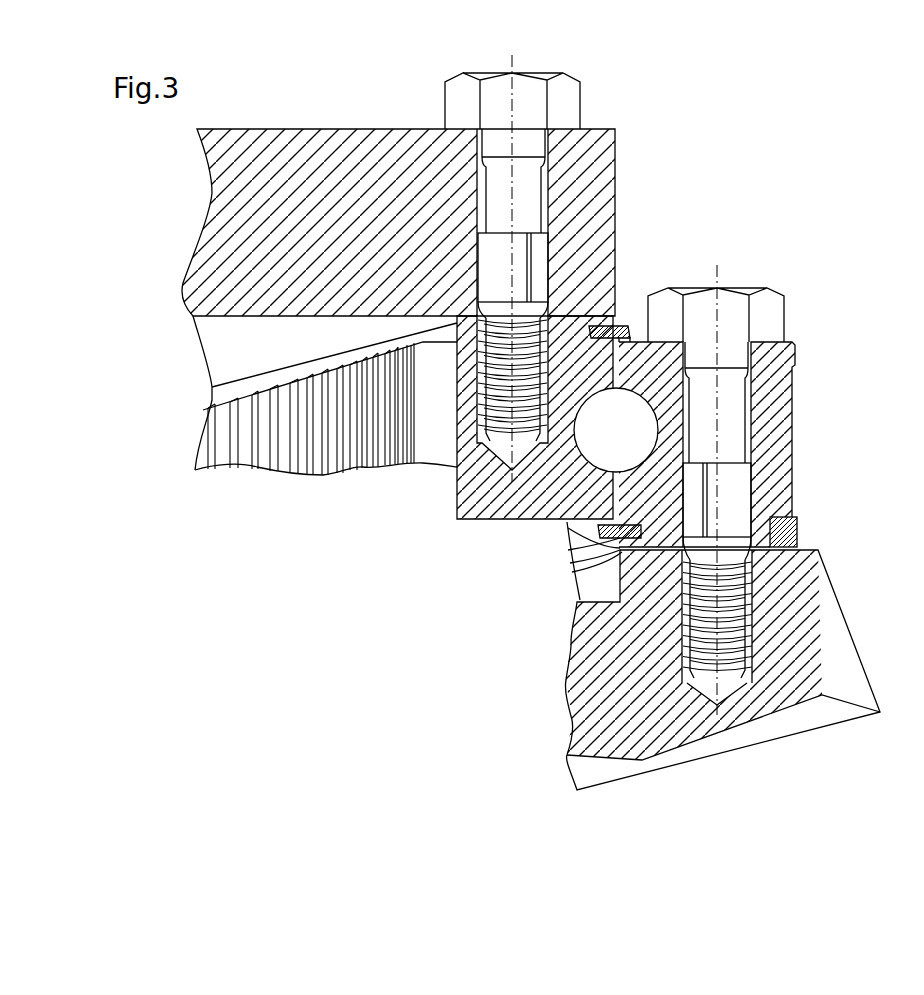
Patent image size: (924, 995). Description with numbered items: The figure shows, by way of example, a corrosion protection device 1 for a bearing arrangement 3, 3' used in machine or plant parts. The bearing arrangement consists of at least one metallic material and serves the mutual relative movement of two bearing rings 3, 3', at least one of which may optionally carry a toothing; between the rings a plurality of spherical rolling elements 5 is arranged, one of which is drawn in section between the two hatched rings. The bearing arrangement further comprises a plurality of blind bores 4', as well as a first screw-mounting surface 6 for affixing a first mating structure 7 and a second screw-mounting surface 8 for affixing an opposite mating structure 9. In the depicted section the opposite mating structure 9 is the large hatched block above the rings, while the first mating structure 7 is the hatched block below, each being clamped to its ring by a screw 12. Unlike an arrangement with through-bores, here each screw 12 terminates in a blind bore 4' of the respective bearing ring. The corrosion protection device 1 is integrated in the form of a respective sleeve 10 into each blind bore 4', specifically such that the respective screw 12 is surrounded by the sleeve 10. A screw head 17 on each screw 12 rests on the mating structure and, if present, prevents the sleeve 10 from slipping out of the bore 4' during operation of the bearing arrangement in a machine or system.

The corrosion protection device 1 is at (803, 88).
The bearing ring 3 is at (498, 454).
The bearing ring 3' is at (734, 442).
The blind bore 4' is at (655, 378).
The spherical rolling element 5 is at (623, 442).
The first screw-mounting surface 6 is at (790, 527).
The first mating structure 7 is at (830, 630).
The second screw-mounting surface 8 is at (572, 307).
The opposite mating structure 9 is at (222, 197).
The sleeve 10 is at (507, 276).
The screw 12 is at (539, 196).
The screw head 17 is at (457, 103).